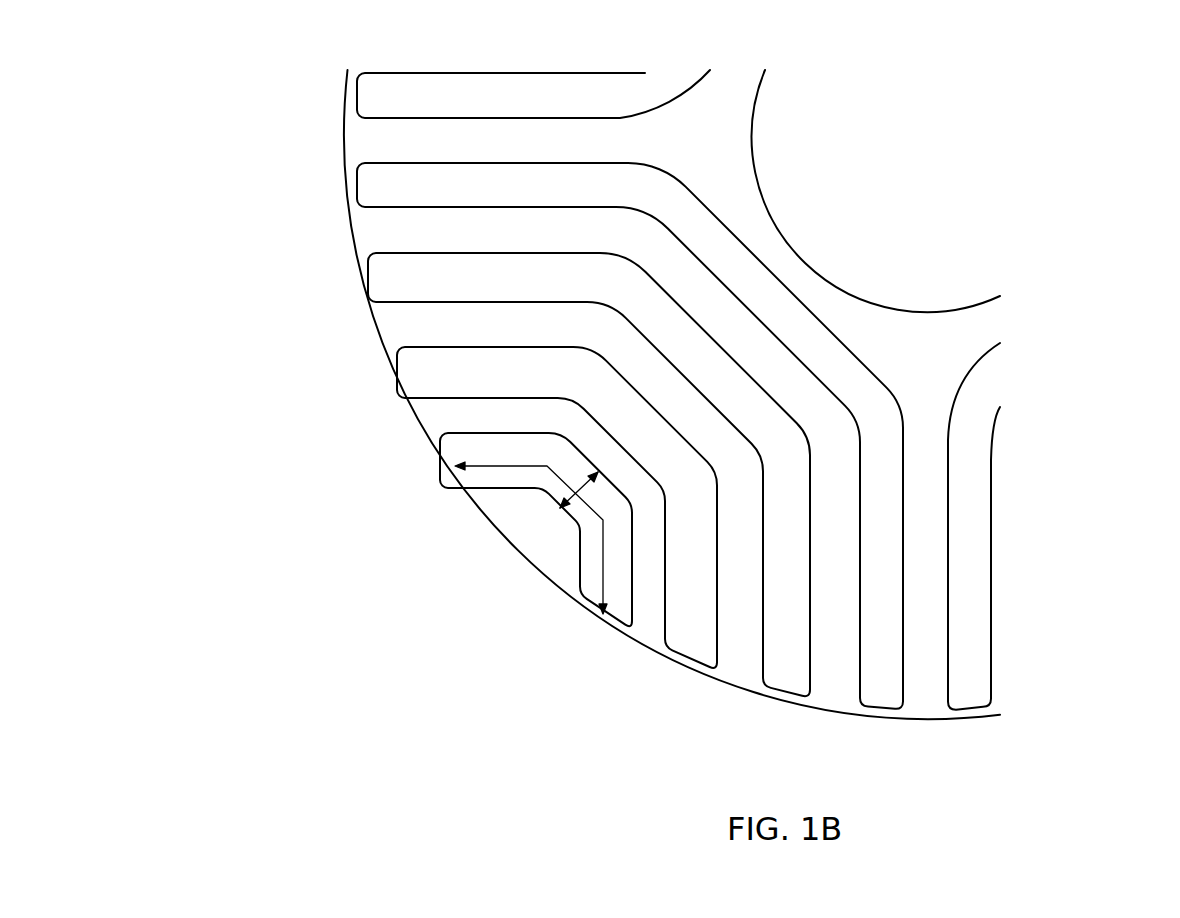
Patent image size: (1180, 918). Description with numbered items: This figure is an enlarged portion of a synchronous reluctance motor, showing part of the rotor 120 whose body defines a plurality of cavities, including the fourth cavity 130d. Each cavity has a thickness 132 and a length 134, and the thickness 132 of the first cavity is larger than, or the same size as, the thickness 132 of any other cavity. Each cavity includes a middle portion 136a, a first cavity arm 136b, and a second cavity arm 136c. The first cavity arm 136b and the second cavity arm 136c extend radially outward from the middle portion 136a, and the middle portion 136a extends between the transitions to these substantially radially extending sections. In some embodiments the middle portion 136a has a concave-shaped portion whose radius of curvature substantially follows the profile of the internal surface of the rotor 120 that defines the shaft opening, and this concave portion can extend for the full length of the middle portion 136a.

The rotor 120 is at (867, 719).
The fourth cavity 130d is at (417, 166).
The thickness 132 is at (577, 497).
The length 134 is at (493, 465).
The middle portion 136a is at (766, 282).
The first cavity arm 136b is at (580, 160).
The second cavity arm 136c is at (906, 515).